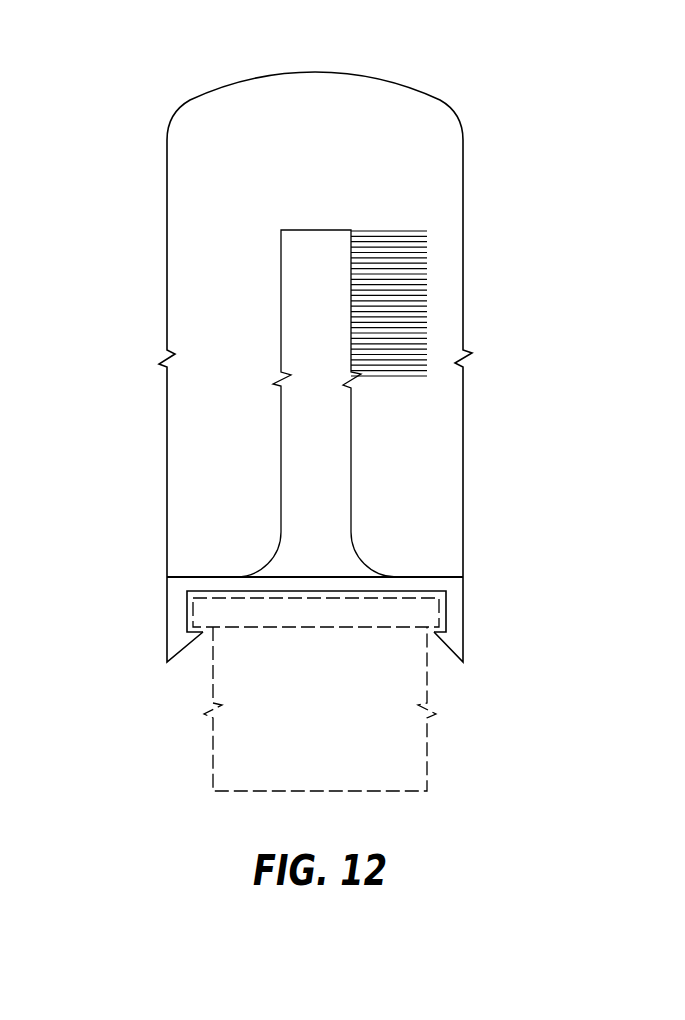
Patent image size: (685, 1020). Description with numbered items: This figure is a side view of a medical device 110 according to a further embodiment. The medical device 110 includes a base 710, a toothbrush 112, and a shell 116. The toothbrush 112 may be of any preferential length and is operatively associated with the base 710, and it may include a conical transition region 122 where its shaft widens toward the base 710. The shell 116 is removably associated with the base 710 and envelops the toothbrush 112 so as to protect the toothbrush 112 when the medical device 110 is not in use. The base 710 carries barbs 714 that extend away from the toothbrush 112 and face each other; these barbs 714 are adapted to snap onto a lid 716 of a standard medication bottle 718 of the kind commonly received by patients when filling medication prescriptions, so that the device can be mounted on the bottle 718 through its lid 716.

The medical device 110 is at (527, 130).
The toothbrush 112 is at (240, 304).
The shell 116 is at (463, 472).
The conical transition region 122 is at (397, 544).
The base 710 is at (463, 620).
The barbs 714 is at (447, 646).
The lid 716 is at (318, 627).
The medication bottle 718 is at (213, 756).